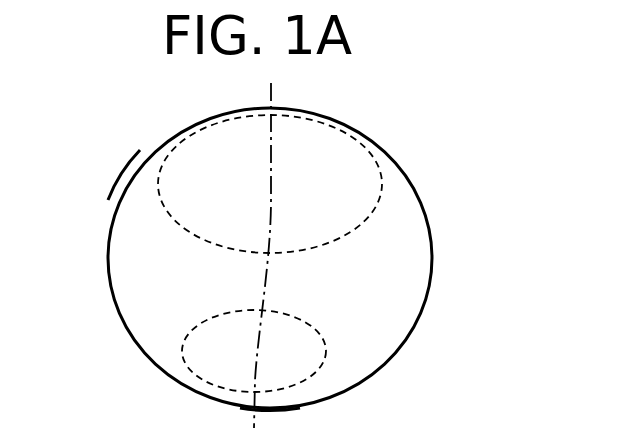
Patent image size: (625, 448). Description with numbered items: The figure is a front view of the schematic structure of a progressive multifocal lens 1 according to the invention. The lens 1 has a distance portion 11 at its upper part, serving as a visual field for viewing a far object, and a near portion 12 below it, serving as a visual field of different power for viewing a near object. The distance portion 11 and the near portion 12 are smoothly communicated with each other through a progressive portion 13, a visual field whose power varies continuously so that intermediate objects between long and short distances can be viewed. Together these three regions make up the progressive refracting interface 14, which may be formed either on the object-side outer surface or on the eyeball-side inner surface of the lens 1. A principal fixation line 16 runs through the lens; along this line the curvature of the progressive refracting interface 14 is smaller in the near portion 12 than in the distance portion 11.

The progressive multifocal lens 1 is at (435, 158).
The distance portion 11 is at (304, 132).
The near portion 12 is at (287, 375).
The progressive portion 13 is at (255, 281).
The progressive refracting interface 14 is at (138, 255).
The principal fixation line 16 is at (253, 418).